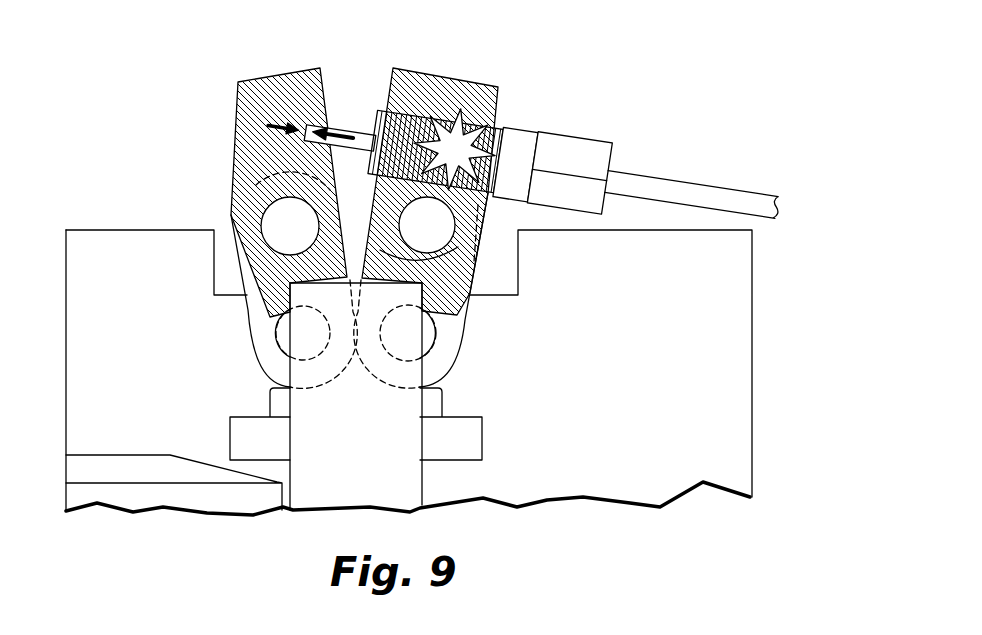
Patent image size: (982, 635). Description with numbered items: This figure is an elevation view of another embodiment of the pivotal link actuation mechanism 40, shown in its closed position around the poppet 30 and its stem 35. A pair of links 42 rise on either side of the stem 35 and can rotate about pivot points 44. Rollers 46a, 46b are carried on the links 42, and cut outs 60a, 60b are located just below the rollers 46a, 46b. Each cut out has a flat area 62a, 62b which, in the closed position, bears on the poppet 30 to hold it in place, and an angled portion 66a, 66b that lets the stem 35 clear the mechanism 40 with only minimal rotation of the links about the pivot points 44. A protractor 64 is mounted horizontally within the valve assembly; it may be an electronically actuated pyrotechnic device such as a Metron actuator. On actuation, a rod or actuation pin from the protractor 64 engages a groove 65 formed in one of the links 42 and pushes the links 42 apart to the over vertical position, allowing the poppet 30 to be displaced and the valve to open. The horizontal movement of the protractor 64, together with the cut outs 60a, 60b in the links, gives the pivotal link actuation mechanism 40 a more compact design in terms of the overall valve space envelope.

The poppet 30 is at (422, 480).
The stem 35 is at (422, 466).
The pivotal link actuation mechanism 40 is at (453, 148).
The links 42 is at (247, 80).
The pivot points 44 is at (456, 220).
The roller 46a is at (437, 340).
The roller 46b is at (278, 330).
The cut out 60a is at (318, 301).
The cut out 60b is at (379, 305).
The flat area 62a is at (322, 250).
The flat area 62b is at (448, 262).
The protractor 64 is at (655, 186).
The groove 65 is at (321, 135).
The angled portion 66a is at (330, 238).
The angled portion 66b is at (458, 262).